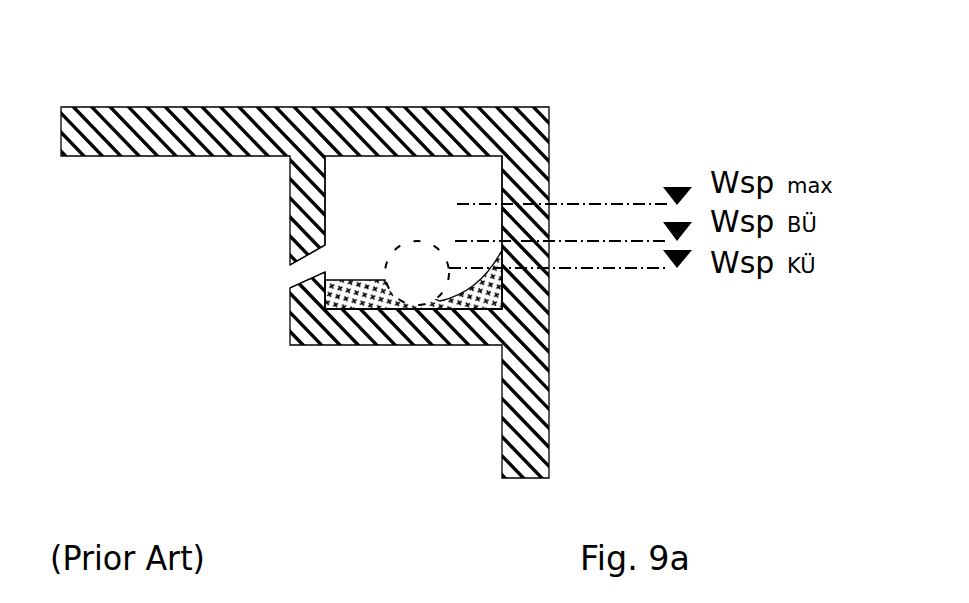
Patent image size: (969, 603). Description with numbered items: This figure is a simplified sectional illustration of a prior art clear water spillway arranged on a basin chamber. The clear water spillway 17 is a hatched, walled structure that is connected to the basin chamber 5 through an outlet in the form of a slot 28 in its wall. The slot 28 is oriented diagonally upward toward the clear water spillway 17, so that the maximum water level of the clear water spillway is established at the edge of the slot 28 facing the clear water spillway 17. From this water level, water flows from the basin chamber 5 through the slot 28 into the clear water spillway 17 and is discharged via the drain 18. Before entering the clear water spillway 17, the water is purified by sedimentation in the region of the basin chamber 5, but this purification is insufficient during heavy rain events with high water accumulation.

The basin chamber 5 is at (162, 193).
The clear water spillway 17 is at (358, 172).
The drain 18 is at (417, 237).
The slot 28 is at (303, 272).